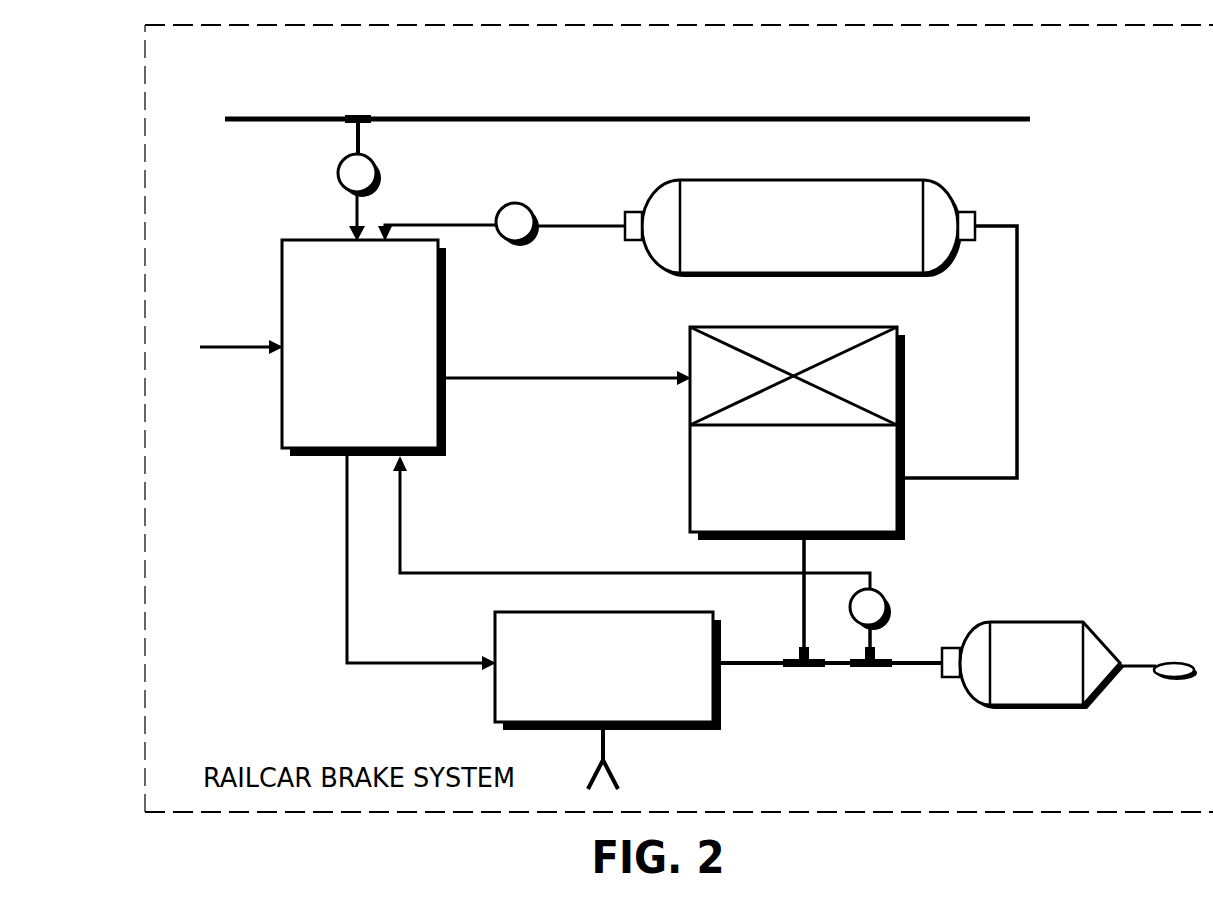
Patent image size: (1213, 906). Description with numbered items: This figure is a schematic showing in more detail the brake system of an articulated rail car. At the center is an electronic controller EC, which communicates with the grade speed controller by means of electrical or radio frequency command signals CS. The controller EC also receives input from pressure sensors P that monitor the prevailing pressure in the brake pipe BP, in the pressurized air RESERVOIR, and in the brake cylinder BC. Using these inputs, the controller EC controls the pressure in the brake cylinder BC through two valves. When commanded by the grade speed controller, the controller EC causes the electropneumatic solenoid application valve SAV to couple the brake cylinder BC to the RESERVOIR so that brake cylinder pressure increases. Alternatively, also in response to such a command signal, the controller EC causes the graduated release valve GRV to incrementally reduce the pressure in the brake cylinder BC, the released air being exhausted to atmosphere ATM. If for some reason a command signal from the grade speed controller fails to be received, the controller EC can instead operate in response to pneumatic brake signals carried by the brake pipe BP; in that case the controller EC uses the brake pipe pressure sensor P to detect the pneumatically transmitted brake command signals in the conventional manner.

The brake pipe BP is at (627, 118).
The pressure sensor P is at (615, 410).
The electronic controller EC is at (364, 348).
The command signals CS is at (217, 343).
The pressurized air reservoir RESERVOIR is at (800, 228).
The solenoid application valve SAV is at (797, 433).
The graduated release valve GRV is at (608, 671).
The atmosphere ATM is at (645, 762).
The brake cylinder BC is at (1069, 665).